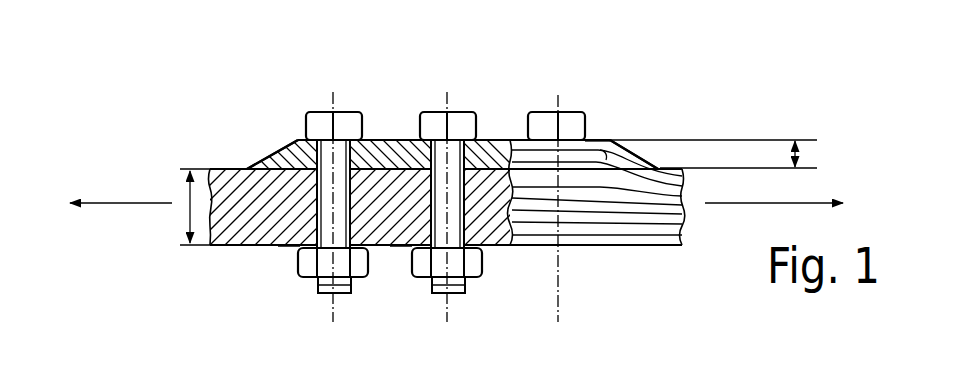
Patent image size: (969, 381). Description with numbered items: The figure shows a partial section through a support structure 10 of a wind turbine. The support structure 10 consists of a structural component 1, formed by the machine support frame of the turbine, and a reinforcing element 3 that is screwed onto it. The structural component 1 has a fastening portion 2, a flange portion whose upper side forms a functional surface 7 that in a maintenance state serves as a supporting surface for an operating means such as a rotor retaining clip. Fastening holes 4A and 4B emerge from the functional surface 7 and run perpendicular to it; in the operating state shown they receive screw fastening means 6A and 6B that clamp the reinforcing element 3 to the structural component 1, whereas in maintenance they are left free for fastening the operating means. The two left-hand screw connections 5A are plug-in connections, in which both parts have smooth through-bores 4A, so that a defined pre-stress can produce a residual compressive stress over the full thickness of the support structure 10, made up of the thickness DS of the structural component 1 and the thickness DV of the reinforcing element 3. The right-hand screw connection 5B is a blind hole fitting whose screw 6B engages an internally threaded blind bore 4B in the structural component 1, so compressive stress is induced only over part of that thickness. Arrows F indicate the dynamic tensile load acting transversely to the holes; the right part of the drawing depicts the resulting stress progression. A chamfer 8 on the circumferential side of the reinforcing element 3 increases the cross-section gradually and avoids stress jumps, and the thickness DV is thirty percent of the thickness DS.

The support structure 10 is at (204, 119).
The structural component 1 is at (228, 238).
The fastening portion 2 is at (676, 151).
The reinforcing element 3 is at (392, 140).
The functional surface 7 is at (245, 160).
The chamfer 8 is at (274, 150).
The plug-in screw connections 5A is at (321, 100).
The blind hole screw fitting 5B is at (575, 100).
The screw fastening means 6A is at (346, 112).
The screw fastening means 6B is at (534, 112).
The fastening holes 4A is at (290, 252).
The blind bore 4B is at (596, 125).
The thickness of the structural component DS is at (187, 222).
The thickness of the reinforcing element DV is at (800, 157).
The tensile load F is at (456, 204).